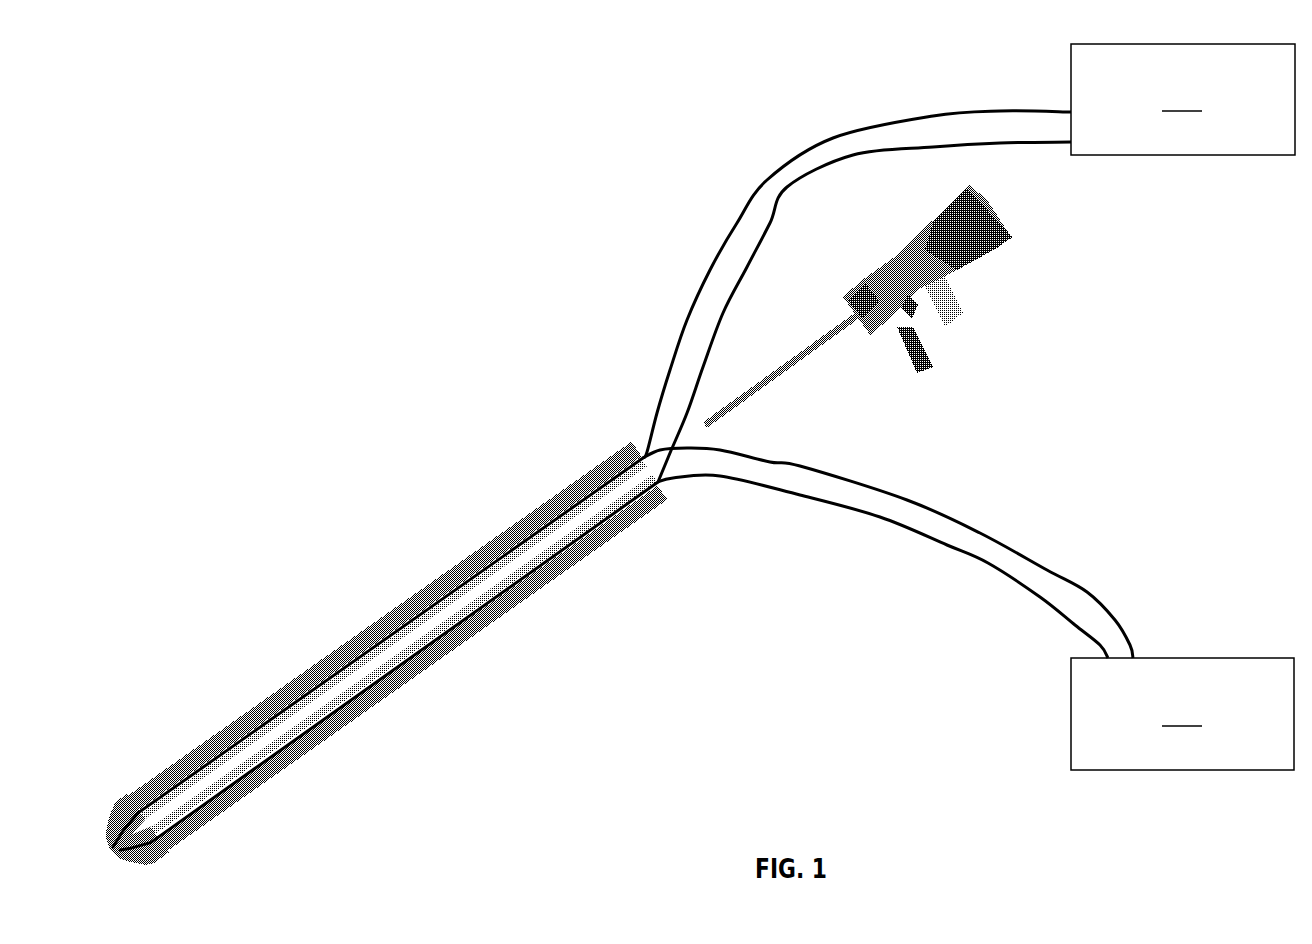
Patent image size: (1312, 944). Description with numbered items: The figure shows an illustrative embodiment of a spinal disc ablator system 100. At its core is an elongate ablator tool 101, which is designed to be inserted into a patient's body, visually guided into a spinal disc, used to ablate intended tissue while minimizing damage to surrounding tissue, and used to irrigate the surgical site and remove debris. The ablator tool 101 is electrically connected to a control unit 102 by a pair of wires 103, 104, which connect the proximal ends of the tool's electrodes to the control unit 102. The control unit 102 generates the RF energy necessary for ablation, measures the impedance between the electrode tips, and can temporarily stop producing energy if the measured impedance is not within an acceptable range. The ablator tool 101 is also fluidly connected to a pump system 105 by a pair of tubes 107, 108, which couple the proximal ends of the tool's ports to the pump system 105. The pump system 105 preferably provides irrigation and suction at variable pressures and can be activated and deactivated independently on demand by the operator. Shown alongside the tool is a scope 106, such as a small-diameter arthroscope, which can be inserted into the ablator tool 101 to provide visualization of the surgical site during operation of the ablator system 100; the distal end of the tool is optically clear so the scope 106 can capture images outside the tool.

The spinal disc ablator system 100 is at (412, 342).
The ablator tool 101 is at (300, 681).
The control unit 102 is at (1183, 99).
The wire 103 is at (1004, 144).
The wire 104 is at (828, 143).
The pump system 105 is at (1182, 714).
The scope 106 is at (963, 265).
The tube 107 is at (988, 563).
The tube 108 is at (1087, 592).